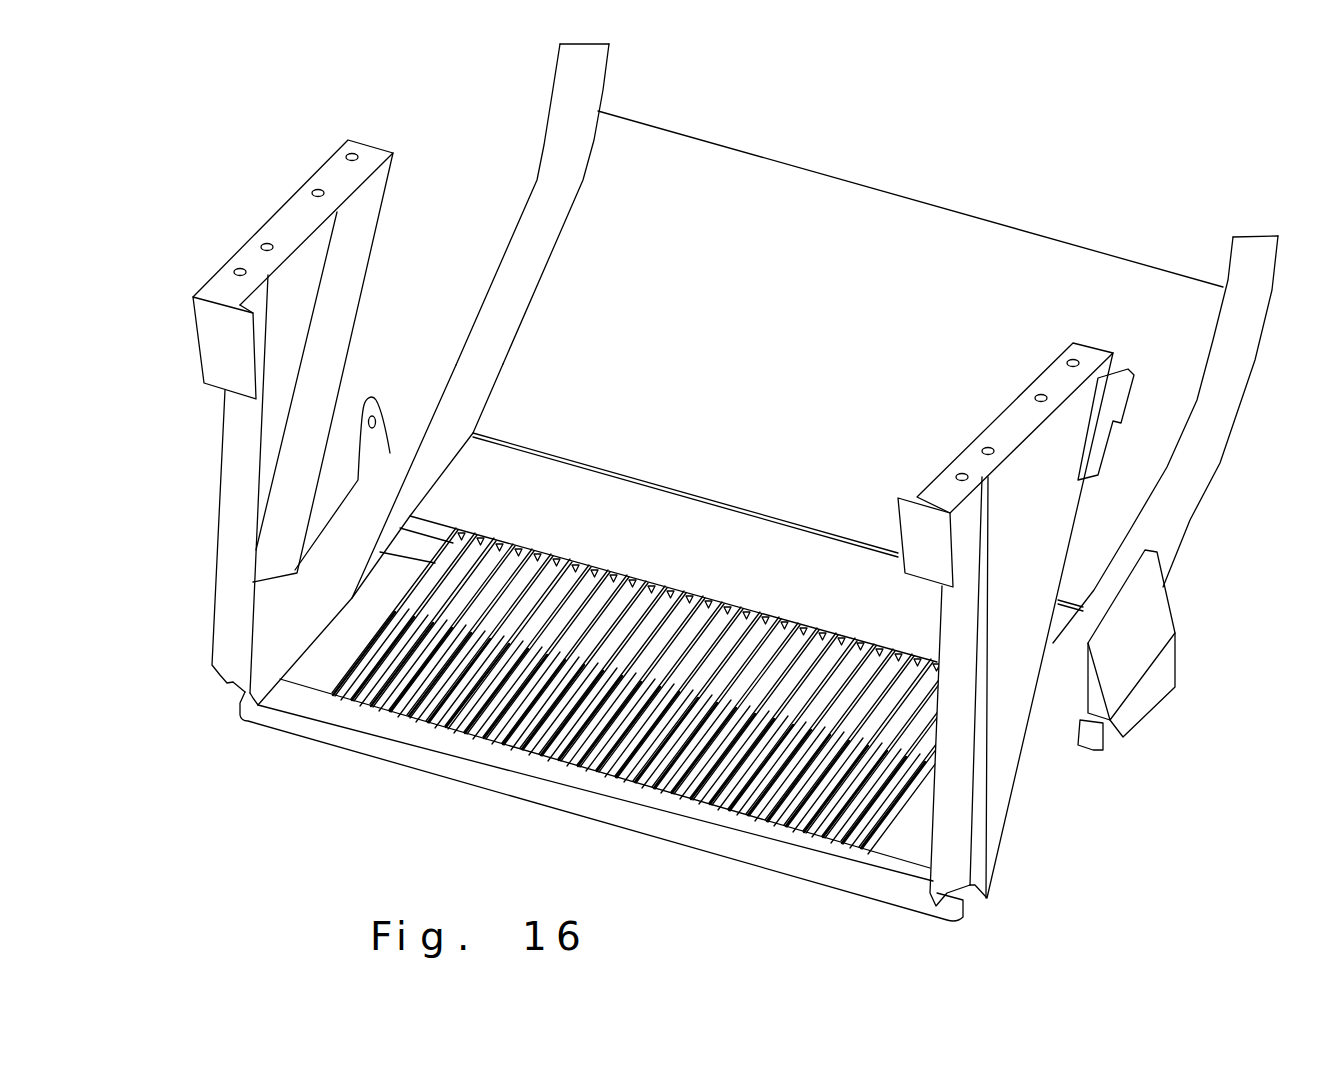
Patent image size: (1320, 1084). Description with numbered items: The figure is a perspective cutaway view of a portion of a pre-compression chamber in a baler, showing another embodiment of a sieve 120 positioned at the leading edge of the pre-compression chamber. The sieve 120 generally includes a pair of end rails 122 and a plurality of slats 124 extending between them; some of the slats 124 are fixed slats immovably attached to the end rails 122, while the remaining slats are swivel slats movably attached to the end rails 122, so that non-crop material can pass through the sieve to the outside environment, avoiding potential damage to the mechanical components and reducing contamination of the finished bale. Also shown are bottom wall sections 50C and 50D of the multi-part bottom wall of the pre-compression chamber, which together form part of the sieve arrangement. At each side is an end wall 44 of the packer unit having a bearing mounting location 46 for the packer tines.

The end wall 44 is at (287, 220).
The bearing mounting location 46 is at (237, 438).
The bottom wall section 50C is at (490, 473).
The bottom wall section 50D is at (583, 290).
The sieve 120 is at (395, 796).
The end rails 122 is at (792, 868).
The slats 124 is at (330, 652).